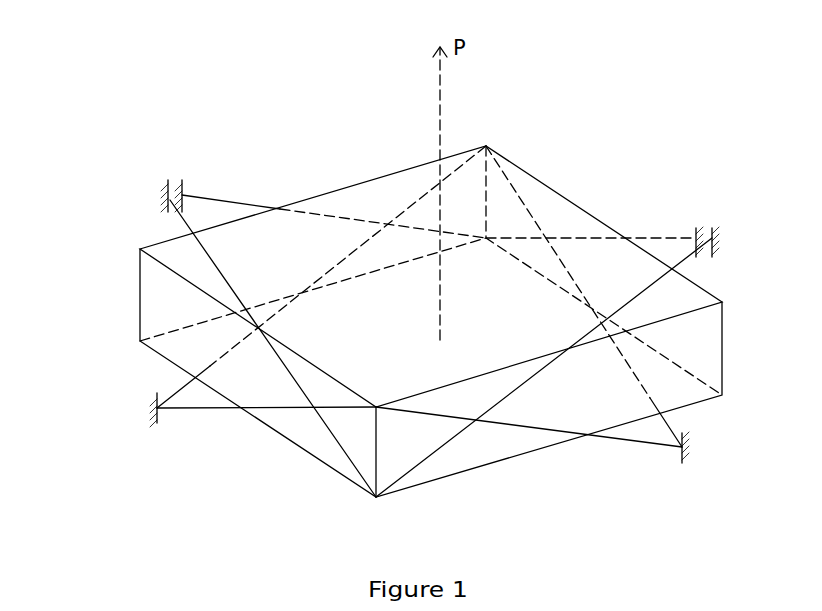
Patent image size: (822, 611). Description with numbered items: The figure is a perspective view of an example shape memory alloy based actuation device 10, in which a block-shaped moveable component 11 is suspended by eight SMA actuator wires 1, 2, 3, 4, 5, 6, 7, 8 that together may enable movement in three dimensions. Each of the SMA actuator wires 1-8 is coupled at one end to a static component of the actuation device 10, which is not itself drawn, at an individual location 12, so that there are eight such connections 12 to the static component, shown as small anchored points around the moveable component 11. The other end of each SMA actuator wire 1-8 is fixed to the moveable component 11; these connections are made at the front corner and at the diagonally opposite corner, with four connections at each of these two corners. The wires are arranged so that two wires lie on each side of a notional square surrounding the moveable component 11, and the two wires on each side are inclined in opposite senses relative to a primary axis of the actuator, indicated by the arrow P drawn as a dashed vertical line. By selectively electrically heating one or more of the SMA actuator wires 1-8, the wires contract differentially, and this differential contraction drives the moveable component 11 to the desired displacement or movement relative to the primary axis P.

The SMA actuator wire 1 is at (340, 448).
The SMA actuator wire 2 is at (199, 410).
The SMA actuator wire 3 is at (665, 236).
The SMA actuator wire 4 is at (516, 191).
The SMA actuator wire 5 is at (434, 452).
The SMA actuator wire 6 is at (623, 442).
The SMA actuator wire 7 is at (222, 197).
The SMA actuator wire 8 is at (421, 196).
The actuation device 10 is at (97, 302).
The moveable component 11 is at (697, 346).
The individual location 12 is at (167, 195).